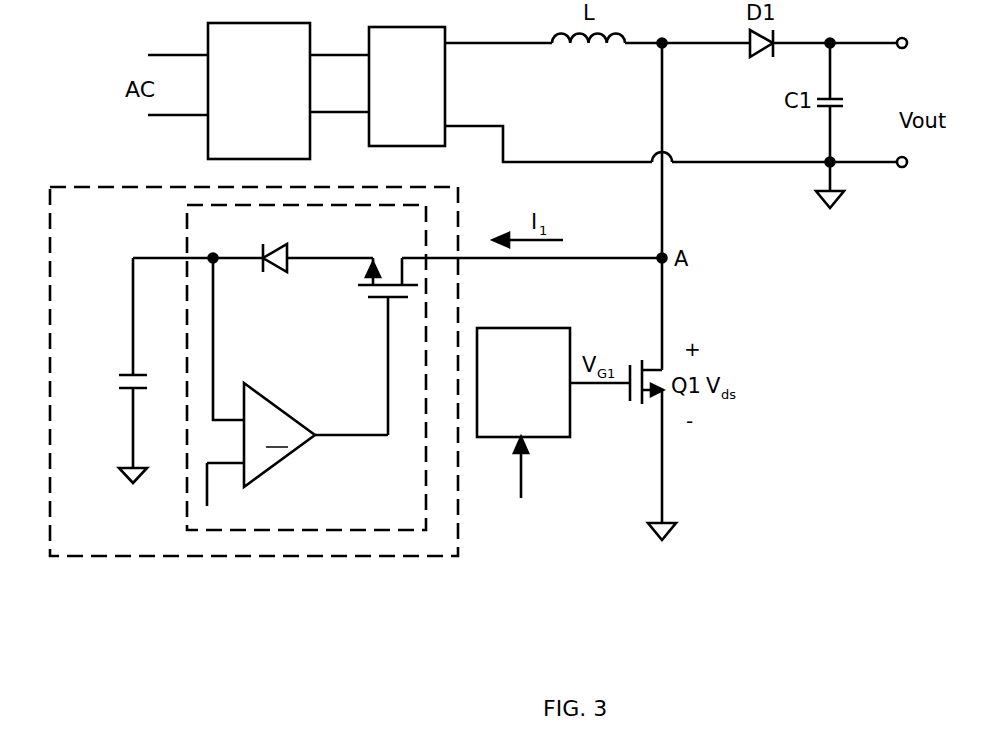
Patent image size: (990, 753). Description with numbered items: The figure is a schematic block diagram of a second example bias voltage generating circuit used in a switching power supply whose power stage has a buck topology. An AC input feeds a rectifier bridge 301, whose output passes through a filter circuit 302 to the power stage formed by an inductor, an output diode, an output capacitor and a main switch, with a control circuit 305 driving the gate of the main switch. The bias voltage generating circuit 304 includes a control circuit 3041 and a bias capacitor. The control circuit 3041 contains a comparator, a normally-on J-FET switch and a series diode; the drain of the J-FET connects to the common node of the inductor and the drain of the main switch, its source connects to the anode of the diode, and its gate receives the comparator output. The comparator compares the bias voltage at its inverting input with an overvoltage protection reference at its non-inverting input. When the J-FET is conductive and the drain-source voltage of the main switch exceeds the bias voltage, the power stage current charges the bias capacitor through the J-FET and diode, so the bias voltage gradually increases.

The rectifier bridge 301 is at (241, 137).
The filter circuit 302 is at (389, 129).
The bias voltage generating circuit 304 is at (120, 556).
The control circuit 3041 is at (372, 531).
The control circuit 305 is at (505, 423).